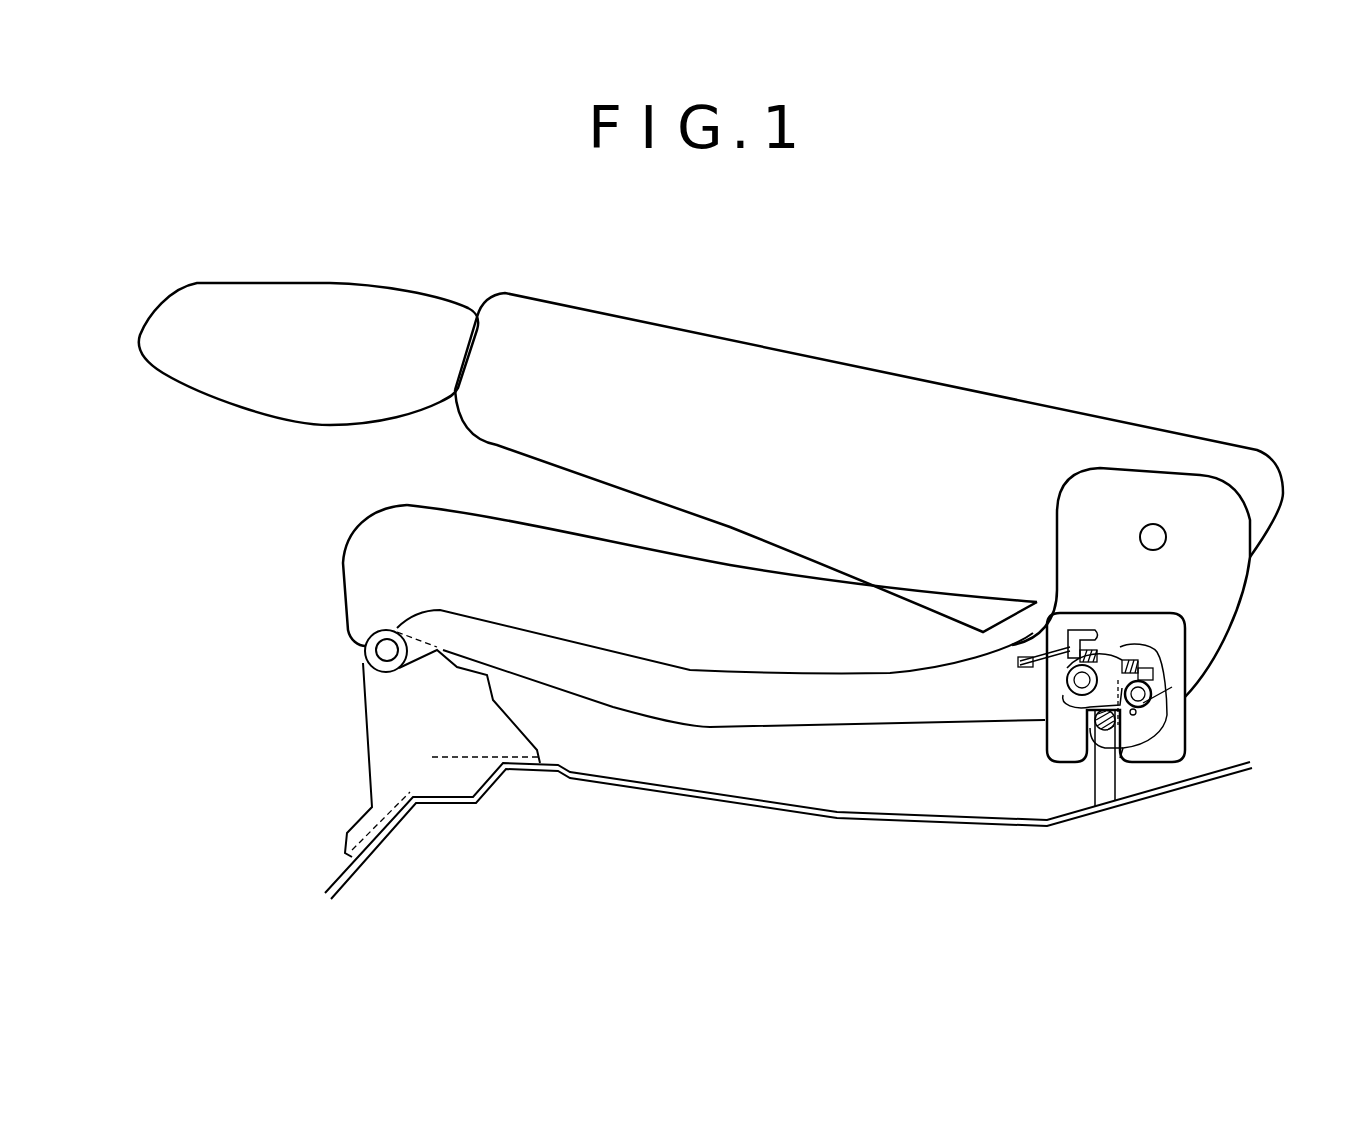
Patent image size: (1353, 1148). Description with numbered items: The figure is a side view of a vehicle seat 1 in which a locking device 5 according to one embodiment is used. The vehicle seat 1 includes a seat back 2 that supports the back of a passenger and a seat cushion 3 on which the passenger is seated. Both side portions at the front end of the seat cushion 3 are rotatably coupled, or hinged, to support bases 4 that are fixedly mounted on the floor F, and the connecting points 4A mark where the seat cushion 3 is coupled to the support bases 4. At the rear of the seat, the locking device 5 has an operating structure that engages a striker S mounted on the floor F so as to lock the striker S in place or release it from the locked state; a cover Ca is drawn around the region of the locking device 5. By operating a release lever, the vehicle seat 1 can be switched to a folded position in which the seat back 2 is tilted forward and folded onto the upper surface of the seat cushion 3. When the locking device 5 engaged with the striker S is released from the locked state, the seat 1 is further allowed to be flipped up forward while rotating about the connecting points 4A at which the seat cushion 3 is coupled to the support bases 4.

The vehicle seat 1 is at (968, 287).
The seat back 2 is at (802, 370).
The seat cushion 3 is at (838, 612).
The cover Ca is at (1033, 633).
The support base 4 is at (383, 742).
The connecting point 4A is at (385, 652).
The locking device 5 is at (1155, 642).
The striker S is at (1120, 725).
The floor F is at (912, 805).